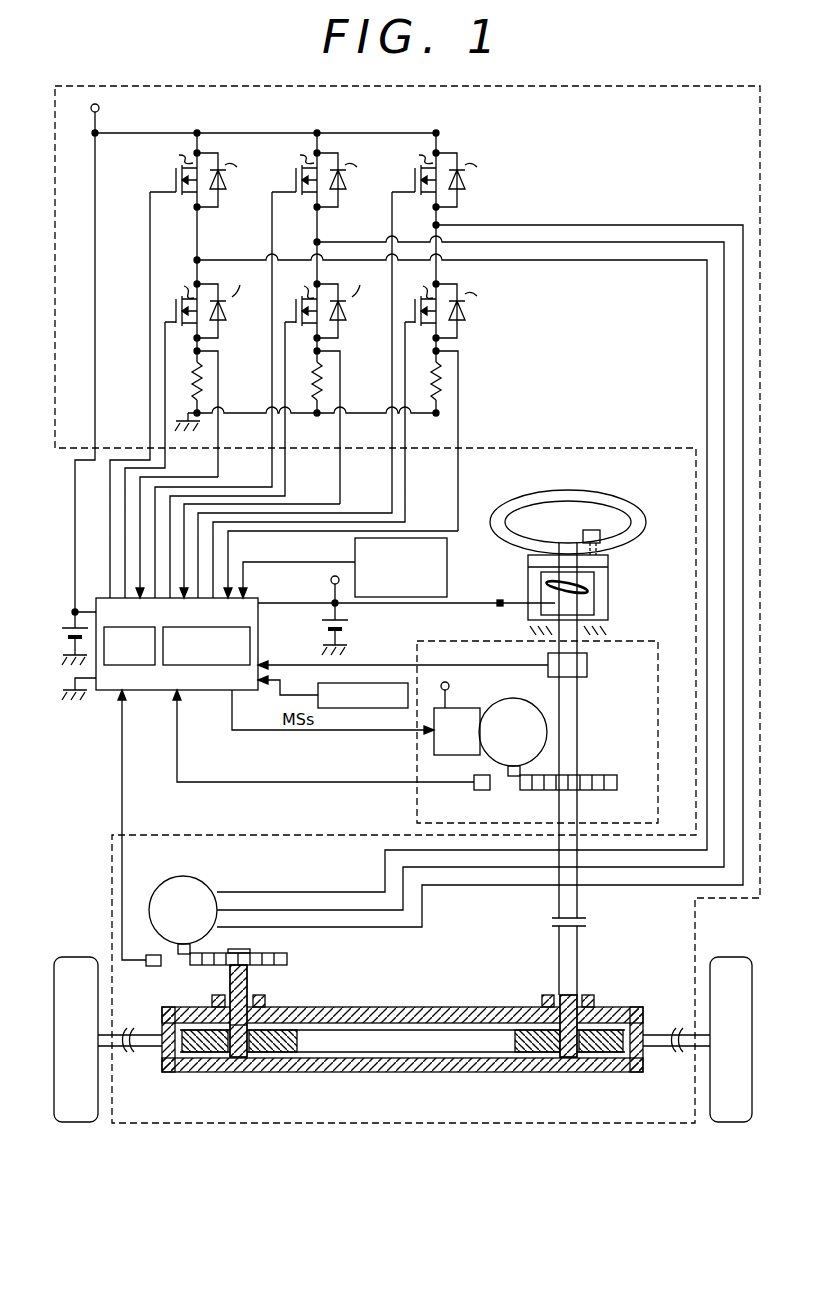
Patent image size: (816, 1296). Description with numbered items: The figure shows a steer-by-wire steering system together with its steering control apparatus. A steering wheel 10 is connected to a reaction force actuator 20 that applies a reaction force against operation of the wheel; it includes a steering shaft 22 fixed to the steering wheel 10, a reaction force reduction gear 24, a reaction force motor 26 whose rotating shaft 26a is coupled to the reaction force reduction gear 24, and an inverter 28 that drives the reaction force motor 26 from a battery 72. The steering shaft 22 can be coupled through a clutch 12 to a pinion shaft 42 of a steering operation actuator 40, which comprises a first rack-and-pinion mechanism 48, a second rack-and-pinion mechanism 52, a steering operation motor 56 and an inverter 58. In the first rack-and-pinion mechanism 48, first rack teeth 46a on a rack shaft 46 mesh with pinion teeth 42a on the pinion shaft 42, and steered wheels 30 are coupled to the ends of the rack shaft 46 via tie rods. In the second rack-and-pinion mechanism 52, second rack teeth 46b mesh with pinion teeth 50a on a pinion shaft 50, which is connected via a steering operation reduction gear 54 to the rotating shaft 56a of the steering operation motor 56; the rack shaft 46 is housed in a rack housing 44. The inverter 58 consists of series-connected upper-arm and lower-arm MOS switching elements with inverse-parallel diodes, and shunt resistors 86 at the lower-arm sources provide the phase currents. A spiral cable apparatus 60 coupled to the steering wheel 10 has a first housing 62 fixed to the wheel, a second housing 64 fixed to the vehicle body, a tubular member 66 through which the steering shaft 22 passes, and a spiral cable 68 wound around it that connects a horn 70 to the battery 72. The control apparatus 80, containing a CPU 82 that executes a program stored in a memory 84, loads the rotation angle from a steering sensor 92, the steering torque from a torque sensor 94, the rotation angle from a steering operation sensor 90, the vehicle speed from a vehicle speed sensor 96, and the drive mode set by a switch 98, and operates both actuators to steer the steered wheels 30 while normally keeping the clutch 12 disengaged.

The steering wheel 10 is at (645, 522).
The clutch 12 is at (597, 924).
The reaction force actuator 20 is at (640, 645).
The steering shaft 22 is at (578, 716).
The reaction force reduction gear 24 is at (602, 775).
The reaction force motor 26 is at (518, 700).
The rotating shaft 26a is at (508, 789).
The inverter 28 is at (463, 708).
The steered wheels 30 is at (80, 956).
The steering operation actuator 40 is at (633, 87).
The pinion shaft 42 is at (578, 955).
The pinion teeth 42a is at (575, 993).
The rack housing 44 is at (630, 1007).
The rack shaft 46 is at (402, 1071).
The first rack teeth 46a is at (603, 1052).
The second rack teeth 46b is at (295, 1055).
The first rack-and-pinion mechanism 48 is at (563, 1075).
The pinion shaft 50 is at (227, 977).
The pinion teeth 50a is at (247, 998).
The second rack-and-pinion mechanism 52 is at (243, 1075).
The steering operation reduction gear 54 is at (270, 953).
The steering operation motor 56 is at (190, 878).
The rotating shaft 56a is at (179, 965).
The inverter 58 is at (307, 312).
The spiral cable apparatus 60 is at (610, 590).
The first housing 62 is at (608, 560).
The second housing 64 is at (596, 605).
The tubular member 66 is at (600, 624).
The spiral cable 68 is at (590, 586).
The horn 70 is at (583, 530).
The battery 72 is at (69, 614).
The control apparatus 80 is at (201, 644).
The central processing unit 82 is at (116, 627).
The memory 84 is at (196, 627).
The shunt resistors 86 is at (184, 378).
The steering operation sensor 90 is at (152, 967).
The steering sensor 92 is at (477, 790).
The torque sensor 94 is at (587, 665).
The vehicle speed sensor 96 is at (447, 562).
The switch 98 is at (362, 708).